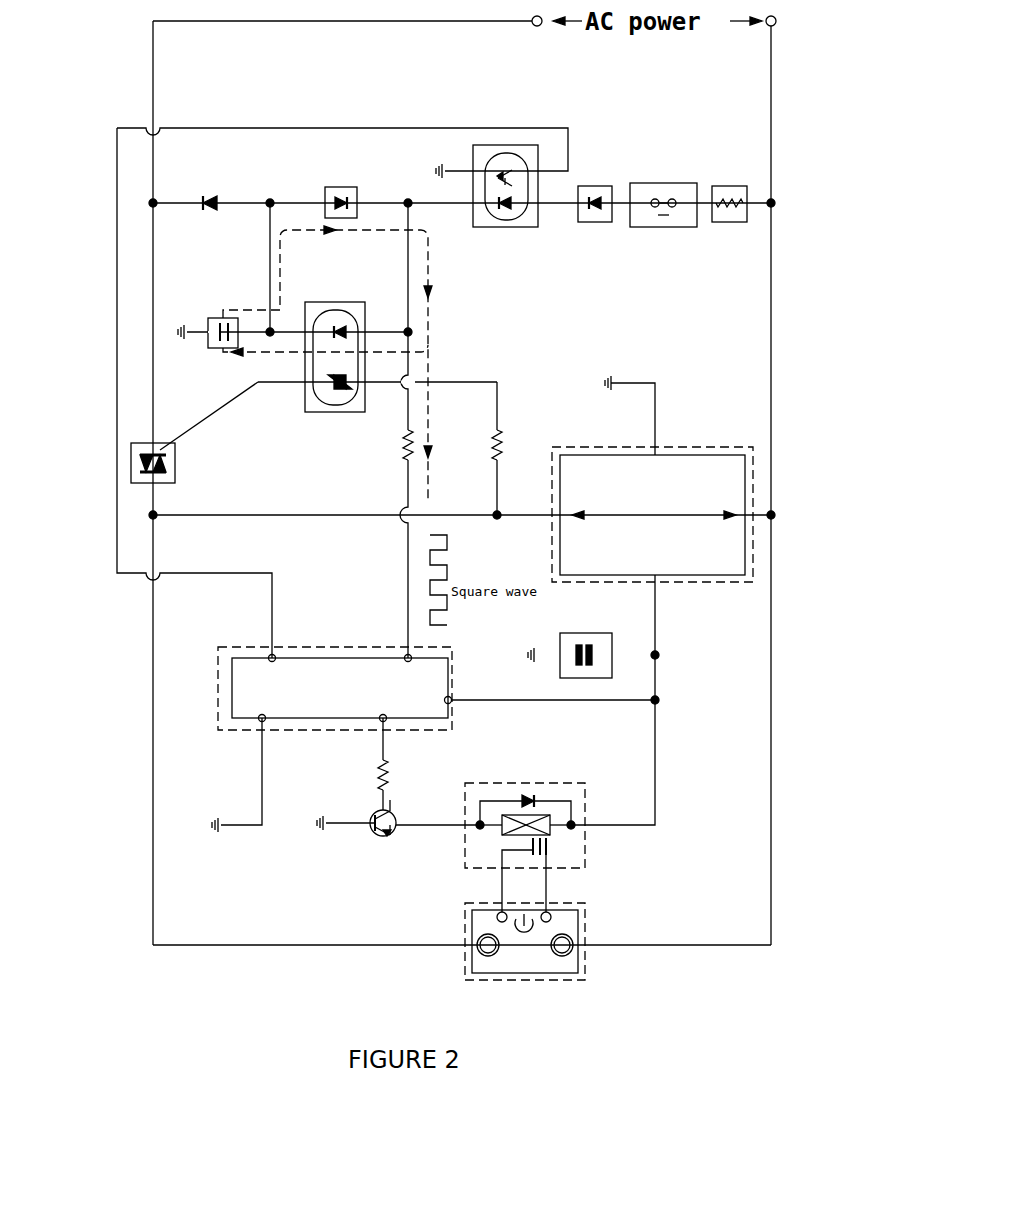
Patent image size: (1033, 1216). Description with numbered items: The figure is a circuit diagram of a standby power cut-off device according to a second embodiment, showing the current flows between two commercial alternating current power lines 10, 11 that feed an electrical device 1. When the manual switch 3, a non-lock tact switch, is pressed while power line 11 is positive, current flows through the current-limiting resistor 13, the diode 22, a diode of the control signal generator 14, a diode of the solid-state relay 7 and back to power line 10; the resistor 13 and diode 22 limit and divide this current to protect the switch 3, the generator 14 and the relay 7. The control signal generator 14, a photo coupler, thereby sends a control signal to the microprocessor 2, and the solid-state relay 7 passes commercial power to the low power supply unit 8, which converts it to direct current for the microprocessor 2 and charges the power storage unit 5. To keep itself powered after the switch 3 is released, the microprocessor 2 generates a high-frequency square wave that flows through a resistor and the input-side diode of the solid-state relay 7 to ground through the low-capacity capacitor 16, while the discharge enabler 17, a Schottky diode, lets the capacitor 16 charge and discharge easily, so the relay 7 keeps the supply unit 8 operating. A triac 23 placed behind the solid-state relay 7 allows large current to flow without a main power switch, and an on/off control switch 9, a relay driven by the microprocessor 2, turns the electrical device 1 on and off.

The electrical device 1 is at (585, 915).
The microprocessor 2 is at (462, 720).
The manual switch 3 is at (680, 183).
The power storage unit 5 is at (565, 633).
The solid-state relay 7 is at (340, 412).
The low power supply unit 8 is at (705, 447).
The on/off control switch 9 is at (585, 843).
The power line 10 is at (153, 68).
The power line 11 is at (771, 76).
The current-limiting resistor 13 is at (729, 222).
The control signal generator 14 is at (495, 228).
The low-capacity capacitor 16 is at (215, 318).
The discharge enabler 17 is at (340, 187).
The diode 22 is at (590, 186).
The triac 23 is at (175, 468).